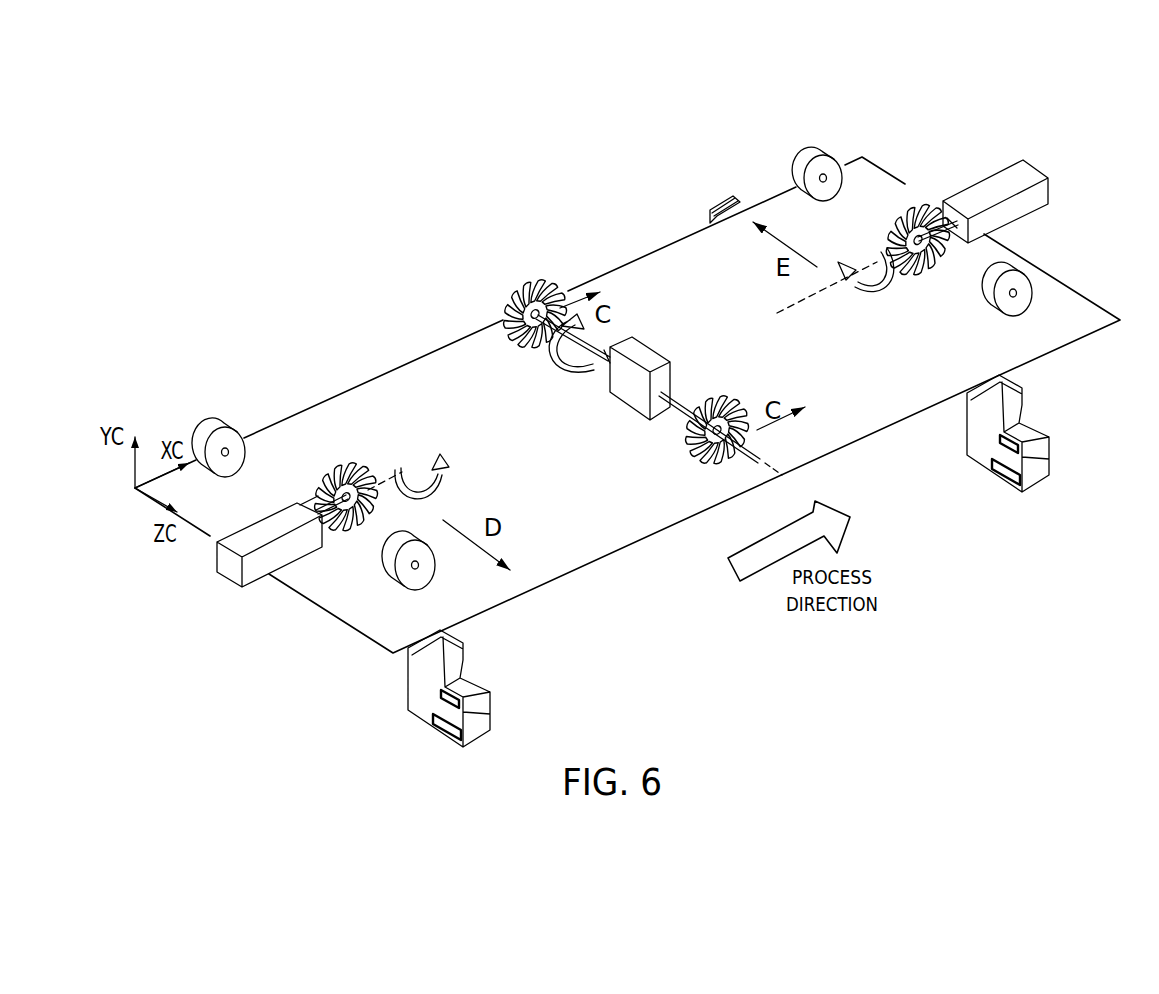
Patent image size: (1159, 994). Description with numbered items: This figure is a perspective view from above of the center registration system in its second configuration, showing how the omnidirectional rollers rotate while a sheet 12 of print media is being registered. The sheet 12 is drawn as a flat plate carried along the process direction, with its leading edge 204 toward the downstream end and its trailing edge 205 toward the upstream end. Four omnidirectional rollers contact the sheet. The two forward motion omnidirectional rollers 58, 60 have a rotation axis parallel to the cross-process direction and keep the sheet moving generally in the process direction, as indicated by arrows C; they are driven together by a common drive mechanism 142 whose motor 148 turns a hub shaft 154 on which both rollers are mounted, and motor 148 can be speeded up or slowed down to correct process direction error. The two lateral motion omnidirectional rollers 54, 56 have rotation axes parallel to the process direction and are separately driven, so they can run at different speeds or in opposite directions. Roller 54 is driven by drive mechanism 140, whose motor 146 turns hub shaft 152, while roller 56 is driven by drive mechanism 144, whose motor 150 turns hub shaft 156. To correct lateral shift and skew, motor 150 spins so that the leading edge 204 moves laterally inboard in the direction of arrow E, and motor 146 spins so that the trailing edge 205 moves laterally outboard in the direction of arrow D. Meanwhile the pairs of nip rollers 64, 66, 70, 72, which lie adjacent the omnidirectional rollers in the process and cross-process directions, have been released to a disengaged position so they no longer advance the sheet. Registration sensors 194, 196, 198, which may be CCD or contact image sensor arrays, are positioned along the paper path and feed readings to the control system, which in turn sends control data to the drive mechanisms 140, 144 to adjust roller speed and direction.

The sheet 12 is at (620, 289).
The omnidirectional roller 54 is at (363, 467).
The omnidirectional roller 56 is at (913, 195).
The omnidirectional roller 58 is at (513, 281).
The omnidirectional roller 60 is at (727, 381).
The nip rollers 64 is at (216, 421).
The nip rollers 66 is at (434, 573).
The nip rollers 70 is at (834, 175).
The nip rollers 72 is at (984, 298).
The drive mechanism 140 is at (293, 558).
The drive mechanism 142 is at (661, 335).
The drive mechanism 144 is at (1000, 157).
The motor 146 is at (282, 495).
The motor 148 is at (636, 383).
The motor 150 is at (1050, 198).
The hub shaft 152 is at (313, 503).
The hub shaft 154 is at (590, 360).
The hub shaft 156 is at (918, 272).
The registration sensor 194 is at (507, 703).
The registration sensor 196 is at (1057, 458).
The registration sensor 198 is at (722, 195).
The leading edge 204 is at (1068, 281).
The trailing edge 205 is at (341, 620).